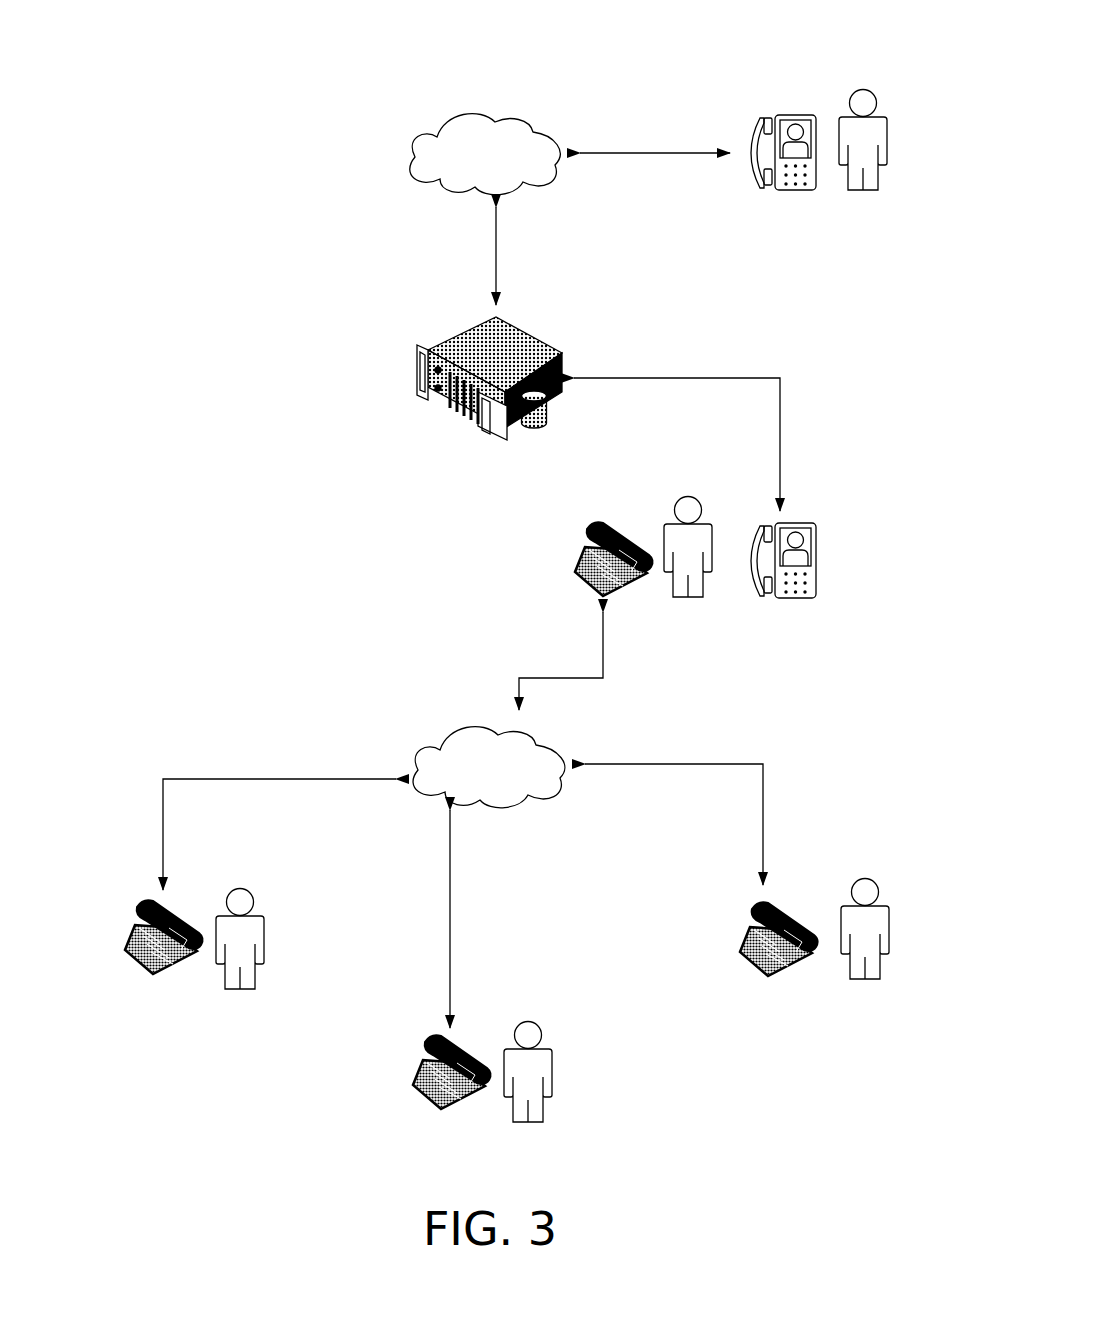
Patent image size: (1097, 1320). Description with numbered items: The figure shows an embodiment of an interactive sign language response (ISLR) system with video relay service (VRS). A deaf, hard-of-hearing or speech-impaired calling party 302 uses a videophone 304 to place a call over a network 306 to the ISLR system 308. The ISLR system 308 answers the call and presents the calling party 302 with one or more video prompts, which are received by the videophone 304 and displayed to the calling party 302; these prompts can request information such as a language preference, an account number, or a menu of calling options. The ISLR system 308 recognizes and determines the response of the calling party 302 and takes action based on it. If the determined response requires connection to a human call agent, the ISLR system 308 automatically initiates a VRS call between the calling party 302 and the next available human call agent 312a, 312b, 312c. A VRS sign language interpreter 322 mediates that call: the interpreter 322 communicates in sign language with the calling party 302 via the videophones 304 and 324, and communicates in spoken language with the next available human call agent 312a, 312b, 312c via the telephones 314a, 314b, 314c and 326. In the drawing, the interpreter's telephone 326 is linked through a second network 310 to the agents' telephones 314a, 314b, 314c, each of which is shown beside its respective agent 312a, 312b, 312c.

The D-HOH-SI calling party 302 is at (888, 130).
The videophone 304 is at (800, 115).
The network 306 is at (485, 154).
The ISLR system 308 is at (530, 333).
The network 310 is at (489, 767).
The human call agent 312a is at (263, 937).
The human call agent 312b is at (552, 1070).
The human call agent 312c is at (888, 927).
The telephone 314a is at (132, 915).
The telephone 314b is at (420, 1048).
The telephone 314c is at (747, 913).
The VRS sign language interpreter 322 is at (704, 508).
The videophone 324 is at (817, 558).
The telephone 326 is at (578, 537).